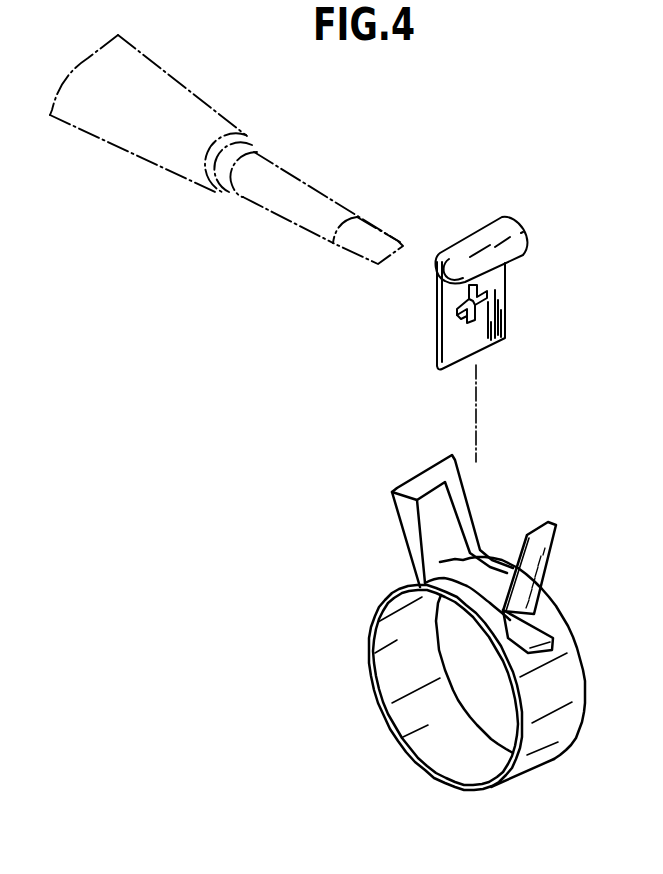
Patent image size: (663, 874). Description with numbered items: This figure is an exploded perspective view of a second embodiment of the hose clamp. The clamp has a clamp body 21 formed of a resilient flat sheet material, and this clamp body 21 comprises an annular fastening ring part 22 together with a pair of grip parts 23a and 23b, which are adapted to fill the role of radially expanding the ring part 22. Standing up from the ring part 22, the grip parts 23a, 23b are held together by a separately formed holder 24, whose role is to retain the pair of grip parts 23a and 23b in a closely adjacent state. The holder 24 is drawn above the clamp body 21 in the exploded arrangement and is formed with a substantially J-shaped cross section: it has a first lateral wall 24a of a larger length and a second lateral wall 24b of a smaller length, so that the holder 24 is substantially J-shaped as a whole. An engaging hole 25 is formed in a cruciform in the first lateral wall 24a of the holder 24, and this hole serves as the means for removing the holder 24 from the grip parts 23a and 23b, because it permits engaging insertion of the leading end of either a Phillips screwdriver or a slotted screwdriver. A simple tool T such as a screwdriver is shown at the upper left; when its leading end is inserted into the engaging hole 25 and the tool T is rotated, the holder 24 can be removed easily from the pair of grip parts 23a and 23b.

The tool T is at (244, 200).
The clamp body 21 is at (434, 623).
The annular fastening ring part 22 is at (428, 723).
The grip part 23a is at (390, 497).
The grip part 23b is at (548, 520).
The holder 24 is at (478, 297).
The first lateral wall 24a is at (437, 337).
The second lateral wall 24b is at (531, 245).
The engaging hole 25 is at (488, 296).